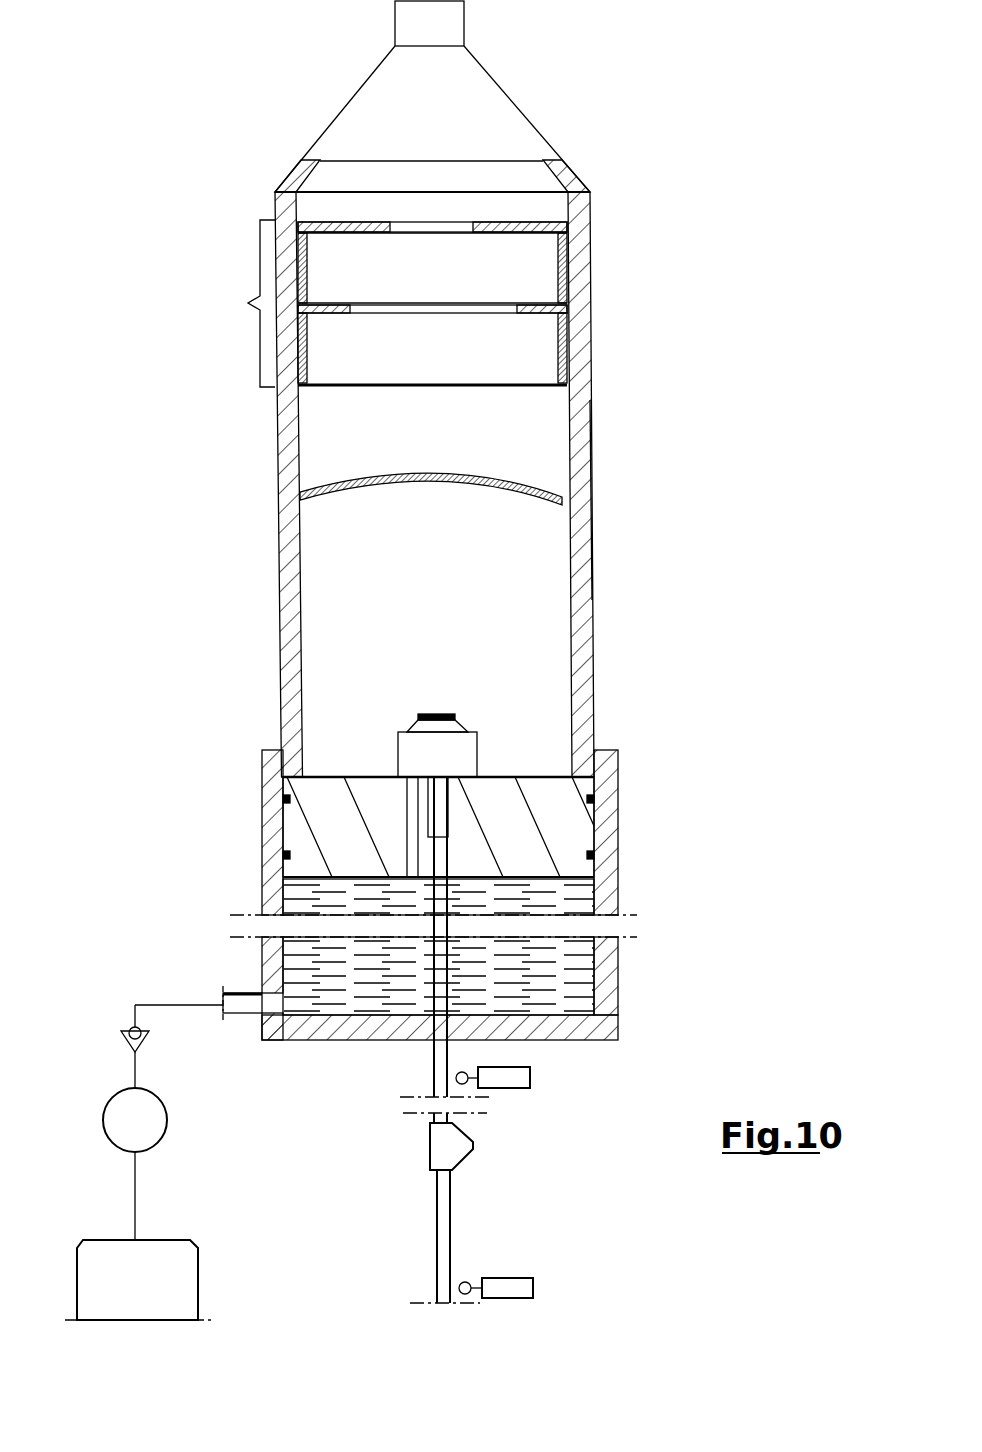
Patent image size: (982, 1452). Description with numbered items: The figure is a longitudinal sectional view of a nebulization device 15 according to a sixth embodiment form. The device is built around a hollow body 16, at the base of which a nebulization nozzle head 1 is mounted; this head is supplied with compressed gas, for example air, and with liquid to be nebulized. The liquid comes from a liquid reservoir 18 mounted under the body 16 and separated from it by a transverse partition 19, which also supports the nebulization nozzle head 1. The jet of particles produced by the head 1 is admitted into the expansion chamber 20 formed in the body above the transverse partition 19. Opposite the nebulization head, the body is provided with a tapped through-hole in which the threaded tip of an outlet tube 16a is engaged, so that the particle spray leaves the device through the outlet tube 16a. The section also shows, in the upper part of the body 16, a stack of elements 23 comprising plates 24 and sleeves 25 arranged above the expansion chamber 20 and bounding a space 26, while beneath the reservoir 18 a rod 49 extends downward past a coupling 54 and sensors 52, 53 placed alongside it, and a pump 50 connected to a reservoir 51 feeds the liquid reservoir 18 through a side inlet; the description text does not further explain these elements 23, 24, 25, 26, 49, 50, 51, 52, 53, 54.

The nebulization nozzle head 1 is at (415, 750).
The nebulization device 15 is at (596, 532).
The hollow body 16 is at (587, 668).
The outlet tube 16a is at (425, 22).
The liquid reservoir 18 is at (597, 983).
The transverse partition 19 is at (545, 830).
The expansion chamber 20 is at (467, 517).
The plate stack 23 is at (235, 303).
The plate 24 is at (425, 222).
The sleeve 25 is at (330, 222).
The chamber 26 is at (560, 268).
The rod 49 is at (440, 1225).
The pump 50 is at (135, 1118).
The reservoir 51 is at (160, 1290).
The sensor 52 is at (515, 1079).
The sensor 53 is at (518, 1288).
The coupling 54 is at (457, 1148).